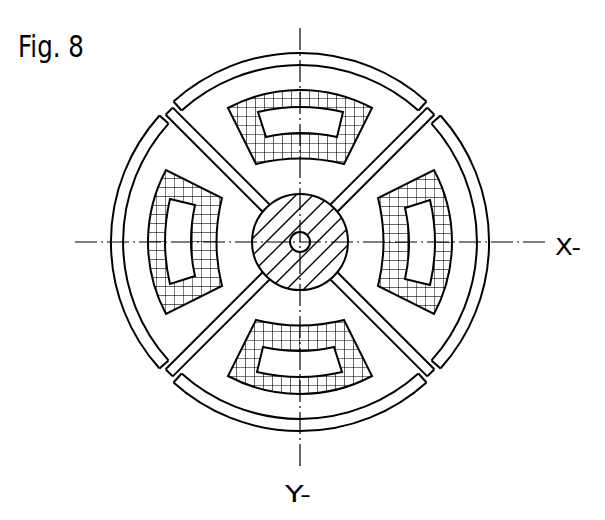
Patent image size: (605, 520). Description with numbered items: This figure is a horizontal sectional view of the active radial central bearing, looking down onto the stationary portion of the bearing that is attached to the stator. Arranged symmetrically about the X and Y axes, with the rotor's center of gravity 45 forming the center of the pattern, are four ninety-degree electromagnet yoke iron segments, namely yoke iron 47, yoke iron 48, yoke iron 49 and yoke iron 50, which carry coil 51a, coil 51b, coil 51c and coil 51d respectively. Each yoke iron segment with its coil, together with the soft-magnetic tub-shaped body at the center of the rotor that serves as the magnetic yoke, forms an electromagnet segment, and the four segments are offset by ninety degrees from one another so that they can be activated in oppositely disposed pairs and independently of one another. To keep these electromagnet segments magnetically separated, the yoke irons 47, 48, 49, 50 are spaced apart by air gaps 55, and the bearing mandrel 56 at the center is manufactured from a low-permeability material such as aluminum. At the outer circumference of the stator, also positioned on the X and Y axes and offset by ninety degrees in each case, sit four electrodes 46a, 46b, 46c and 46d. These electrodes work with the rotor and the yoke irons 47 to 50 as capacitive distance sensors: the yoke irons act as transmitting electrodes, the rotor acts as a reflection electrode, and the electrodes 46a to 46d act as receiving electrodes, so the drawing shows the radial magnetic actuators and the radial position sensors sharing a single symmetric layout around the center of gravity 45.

The center of gravity 45 is at (293, 239).
The electrode 46a is at (480, 292).
The electrode 46b is at (226, 414).
The electrode 46c is at (122, 210).
The electrode 46d is at (398, 86).
The yoke iron 47 is at (438, 142).
The yoke iron 48 is at (403, 386).
The yoke iron 49 is at (157, 341).
The yoke iron 50 is at (205, 103).
The coil 51a is at (452, 203).
The coil 51b is at (342, 390).
The coil 51c is at (158, 283).
The coil 51d is at (250, 100).
The air gap 55 is at (177, 118).
The bearing mandrel 56 is at (312, 207).